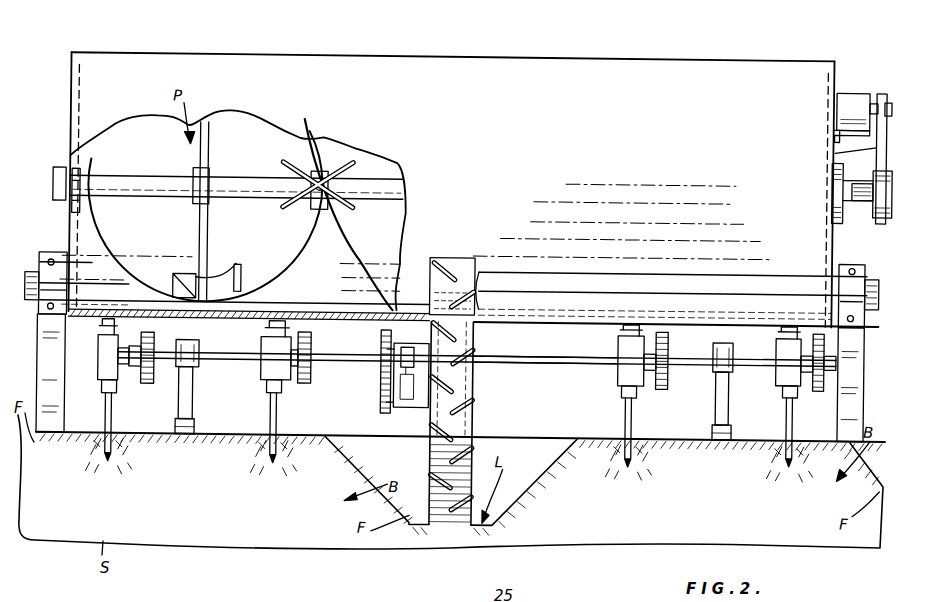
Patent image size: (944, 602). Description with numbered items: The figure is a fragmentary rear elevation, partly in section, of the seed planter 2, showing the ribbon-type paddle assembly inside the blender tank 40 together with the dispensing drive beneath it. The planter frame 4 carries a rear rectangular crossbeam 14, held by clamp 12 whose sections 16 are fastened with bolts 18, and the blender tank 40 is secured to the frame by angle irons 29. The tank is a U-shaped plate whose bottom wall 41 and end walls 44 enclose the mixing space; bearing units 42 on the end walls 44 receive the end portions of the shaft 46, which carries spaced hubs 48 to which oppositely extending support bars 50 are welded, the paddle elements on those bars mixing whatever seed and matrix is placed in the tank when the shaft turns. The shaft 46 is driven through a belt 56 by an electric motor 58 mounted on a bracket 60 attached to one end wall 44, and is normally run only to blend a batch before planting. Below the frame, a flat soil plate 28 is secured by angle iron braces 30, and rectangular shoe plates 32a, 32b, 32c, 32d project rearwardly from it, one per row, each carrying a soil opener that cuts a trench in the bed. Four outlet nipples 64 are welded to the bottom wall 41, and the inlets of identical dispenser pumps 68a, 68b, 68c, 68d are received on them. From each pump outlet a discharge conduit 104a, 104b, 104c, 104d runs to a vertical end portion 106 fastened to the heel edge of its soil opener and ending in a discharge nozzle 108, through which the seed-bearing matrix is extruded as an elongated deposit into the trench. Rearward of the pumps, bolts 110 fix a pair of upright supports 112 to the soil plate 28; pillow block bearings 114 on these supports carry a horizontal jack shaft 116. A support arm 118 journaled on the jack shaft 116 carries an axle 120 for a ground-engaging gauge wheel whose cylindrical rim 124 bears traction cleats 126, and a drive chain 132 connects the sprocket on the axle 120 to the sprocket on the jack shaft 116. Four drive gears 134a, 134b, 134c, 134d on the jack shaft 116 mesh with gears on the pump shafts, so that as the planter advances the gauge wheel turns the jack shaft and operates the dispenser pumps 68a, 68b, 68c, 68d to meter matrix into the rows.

The seed planter 2 is at (626, 39).
The frame 4 is at (254, 323).
The clamp 12 is at (40, 263).
The rear rectangular crossbeam 14 is at (29, 304).
The clamp section 16 is at (101, 262).
The bolts 18 is at (66, 237).
The soil plate 28 is at (403, 435).
The angle irons 29 is at (70, 250).
The angle iron braces 30 is at (44, 378).
The shoe plate 32a is at (121, 436).
The shoe plate 32b is at (273, 435).
The shoe plate 32c is at (643, 436).
The shoe plate 32d is at (797, 434).
The blender tank 40 is at (490, 80).
The bottom wall 41 is at (334, 309).
The bearing units 42 is at (55, 166).
The end walls 44 is at (77, 66).
The shaft 46 is at (219, 176).
The hubs 48 is at (196, 178).
The support bars 50 is at (86, 174).
The belt 56 is at (832, 146).
The electric motor 58 is at (851, 84).
The bracket 60 is at (831, 128).
The outlet nipples 64 is at (102, 316).
The dispenser pump 68a is at (113, 382).
The dispenser pump 68b is at (283, 380).
The dispenser pump 68c is at (617, 342).
The dispenser pump 68d is at (778, 351).
The discharge conduit 104a is at (103, 421).
The discharge conduit 104b is at (273, 395).
The discharge conduit 104c is at (624, 397).
The discharge conduit 104d is at (788, 393).
The end portion 106 is at (106, 459).
The discharge nozzle 108 is at (116, 455).
The bolts 110 is at (181, 436).
The upright supports 112 is at (180, 401).
The pillow block bearings 114 is at (189, 338).
The jack shaft 116 is at (525, 366).
The support arm 118 is at (428, 288).
The axle 120 is at (375, 404).
The cylindrical rim 124 is at (430, 263).
The traction cleats 126 is at (453, 284).
The drive chain 132 is at (381, 352).
The drive gear 134a is at (144, 330).
The drive gear 134b is at (304, 380).
The drive gear 134c is at (661, 383).
The drive gear 134d is at (808, 372).